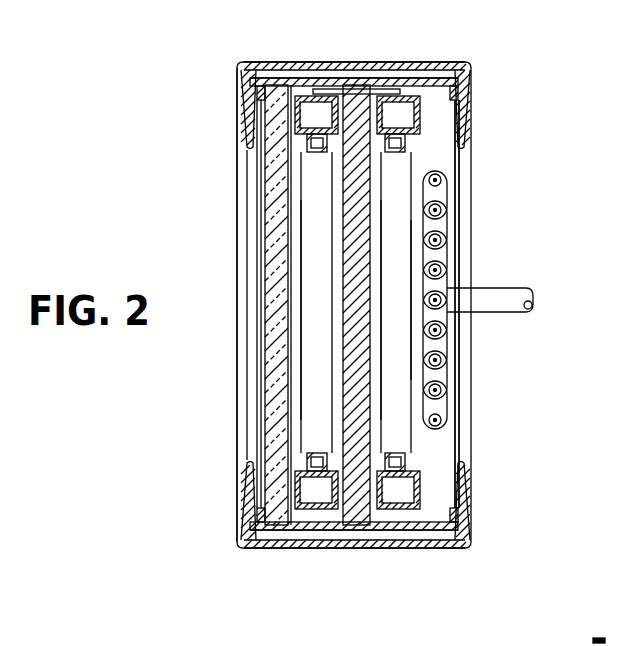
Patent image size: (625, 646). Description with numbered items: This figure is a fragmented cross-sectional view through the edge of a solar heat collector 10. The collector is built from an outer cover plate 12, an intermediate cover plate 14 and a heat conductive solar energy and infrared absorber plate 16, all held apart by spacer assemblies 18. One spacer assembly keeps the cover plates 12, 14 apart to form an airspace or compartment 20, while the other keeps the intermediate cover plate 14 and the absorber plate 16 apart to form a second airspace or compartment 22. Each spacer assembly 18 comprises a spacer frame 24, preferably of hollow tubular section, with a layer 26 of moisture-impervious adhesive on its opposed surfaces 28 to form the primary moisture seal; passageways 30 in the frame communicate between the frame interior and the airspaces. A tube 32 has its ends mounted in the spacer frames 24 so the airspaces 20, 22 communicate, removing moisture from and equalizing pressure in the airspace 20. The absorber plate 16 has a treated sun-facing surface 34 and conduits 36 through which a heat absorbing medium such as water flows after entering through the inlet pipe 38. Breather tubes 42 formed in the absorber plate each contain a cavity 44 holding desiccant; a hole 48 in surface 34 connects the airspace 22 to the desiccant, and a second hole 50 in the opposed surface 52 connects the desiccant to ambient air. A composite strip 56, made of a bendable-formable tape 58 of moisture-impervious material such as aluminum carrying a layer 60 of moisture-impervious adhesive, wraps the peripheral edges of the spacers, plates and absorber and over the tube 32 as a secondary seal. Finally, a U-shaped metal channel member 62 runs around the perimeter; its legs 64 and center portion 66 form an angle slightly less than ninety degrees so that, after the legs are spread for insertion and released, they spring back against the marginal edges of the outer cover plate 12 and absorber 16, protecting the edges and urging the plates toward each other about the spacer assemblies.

The solar heat collector 10 is at (522, 46).
The outer cover plate 12 is at (268, 243).
The intermediate cover plate 14 is at (350, 276).
The solar energy and infrared absorber plate 16 is at (490, 277).
The spacer assemblies 18 is at (318, 216).
The airspace or compartment 20 is at (312, 308).
The airspace or compartment 22 is at (397, 335).
The spacer frame 24 is at (337, 157).
The layer of moisture-impervious adhesive 26 is at (300, 146).
The opposed surfaces 28 is at (296, 108).
The passageways 30 is at (310, 140).
The tube 32 is at (337, 89).
The surface 34 is at (422, 256).
The conduits 36 is at (422, 310).
The inlet pipe 38 is at (532, 299).
The breather tubes 42 is at (463, 165).
The cavity 44 is at (462, 411).
The hole 48 is at (430, 420).
The second hole 50 is at (442, 180).
The opposed surface 52 is at (442, 330).
The composite strip 56 is at (246, 68).
The bendable-formable tape 58 is at (385, 78).
The layer of moisture-impervious adhesive 60 is at (258, 124).
The channel member 62 is at (262, 52).
The legs 64 is at (244, 82).
The center portion 66 is at (325, 64).